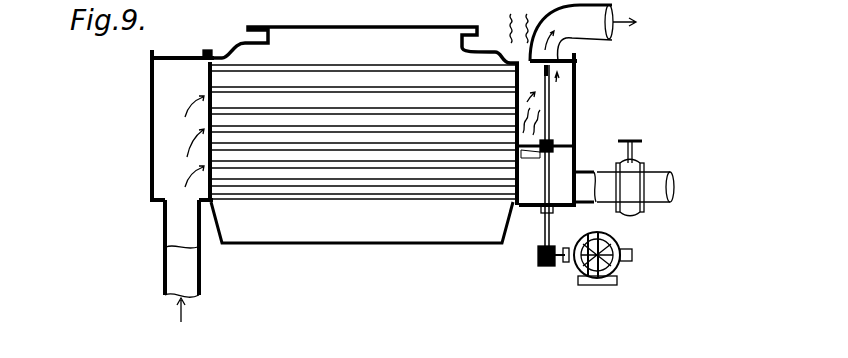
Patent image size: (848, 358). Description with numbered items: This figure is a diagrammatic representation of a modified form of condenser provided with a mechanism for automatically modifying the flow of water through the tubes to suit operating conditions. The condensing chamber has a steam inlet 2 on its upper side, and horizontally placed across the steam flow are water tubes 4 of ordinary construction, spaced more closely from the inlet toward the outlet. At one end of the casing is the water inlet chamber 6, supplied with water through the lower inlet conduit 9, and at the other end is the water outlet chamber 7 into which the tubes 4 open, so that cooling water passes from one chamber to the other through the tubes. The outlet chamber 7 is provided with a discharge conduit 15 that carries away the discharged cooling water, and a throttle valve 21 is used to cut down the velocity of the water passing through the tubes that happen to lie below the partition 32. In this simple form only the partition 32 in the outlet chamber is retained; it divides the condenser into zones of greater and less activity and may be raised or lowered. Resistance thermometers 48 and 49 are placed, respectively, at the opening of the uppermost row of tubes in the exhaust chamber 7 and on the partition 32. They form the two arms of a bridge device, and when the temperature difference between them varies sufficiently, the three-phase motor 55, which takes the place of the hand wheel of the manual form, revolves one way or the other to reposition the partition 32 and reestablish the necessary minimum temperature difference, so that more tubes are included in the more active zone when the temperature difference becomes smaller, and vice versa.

The steam inlet 2 is at (371, 35).
The water tubes 4 is at (312, 138).
The water inlet chamber 6 is at (160, 97).
The water outlet chamber 7 is at (567, 93).
The lower inlet conduit 9 is at (188, 236).
The discharge conduit 15 is at (572, 40).
The throttle valve 21 is at (631, 174).
The partition 32 is at (568, 144).
The resistance thermometer 48 is at (520, 65).
The resistance thermometer 49 is at (521, 149).
The three-phase motor 55 is at (581, 271).